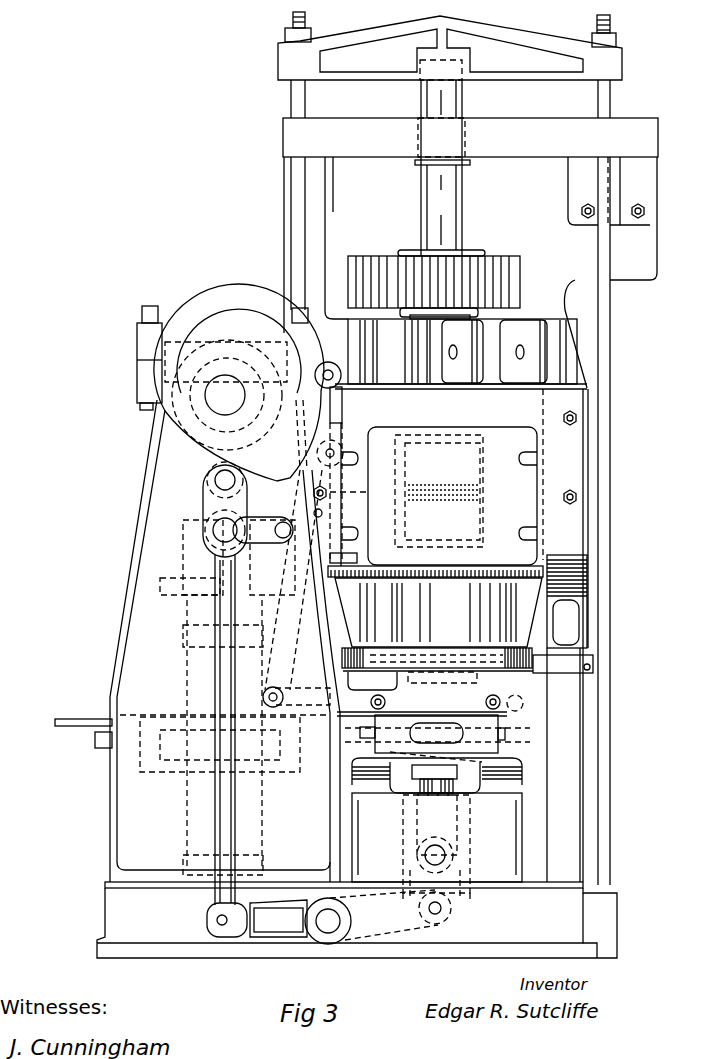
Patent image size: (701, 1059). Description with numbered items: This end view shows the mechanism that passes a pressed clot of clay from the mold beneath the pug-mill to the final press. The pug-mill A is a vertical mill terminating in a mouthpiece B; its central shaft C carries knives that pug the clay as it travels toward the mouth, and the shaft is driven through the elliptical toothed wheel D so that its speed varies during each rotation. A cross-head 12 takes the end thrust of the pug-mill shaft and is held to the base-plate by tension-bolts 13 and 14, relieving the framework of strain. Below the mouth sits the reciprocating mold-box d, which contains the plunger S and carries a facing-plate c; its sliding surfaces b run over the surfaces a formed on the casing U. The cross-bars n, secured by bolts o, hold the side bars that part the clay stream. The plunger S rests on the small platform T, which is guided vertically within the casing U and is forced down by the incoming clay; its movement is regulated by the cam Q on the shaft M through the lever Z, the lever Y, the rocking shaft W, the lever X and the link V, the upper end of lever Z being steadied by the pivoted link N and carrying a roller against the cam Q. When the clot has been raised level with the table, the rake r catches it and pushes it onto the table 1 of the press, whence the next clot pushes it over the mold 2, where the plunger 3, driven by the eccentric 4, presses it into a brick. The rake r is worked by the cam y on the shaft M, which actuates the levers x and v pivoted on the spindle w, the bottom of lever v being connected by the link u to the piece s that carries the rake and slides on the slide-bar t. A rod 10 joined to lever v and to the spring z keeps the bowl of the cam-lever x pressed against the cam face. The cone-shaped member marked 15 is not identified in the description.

The table 1 is at (80, 718).
The mold 2 is at (225, 795).
The plunger 3 is at (227, 583).
The eccentric 4 is at (215, 302).
The rod 10 is at (341, 494).
The cross-head 12 is at (450, 46).
The tension-bolt 13 is at (298, 212).
The tension-bolt 14 is at (612, 340).
The cone 15 is at (438, 612).
The pug-mill A is at (458, 635).
The mouthpiece B is at (437, 671).
The central shaft C is at (441, 168).
The elliptical toothed wheel D is at (523, 281).
The shaft M is at (212, 378).
The pivoted link N is at (262, 518).
The cam Q is at (239, 500).
The plunger S is at (437, 787).
The platform T is at (435, 822).
The casing U is at (437, 837).
The link V is at (450, 897).
The rocking shaft W is at (328, 921).
The lever X is at (384, 915).
The lever Y is at (257, 918).
The lever Z is at (225, 730).
The surface a is at (437, 771).
The sliding surface b is at (366, 762).
The facing-plate c is at (455, 713).
The mold-box d is at (505, 743).
The cross-bar n is at (435, 704).
The bolt o is at (505, 708).
The rake r is at (359, 730).
The piece s is at (372, 681).
The slide-bar t is at (468, 718).
The link u is at (296, 696).
The lever v is at (293, 580).
The spindle w is at (338, 447).
The lever x is at (337, 412).
The cam y is at (305, 365).
The spring z is at (439, 491).